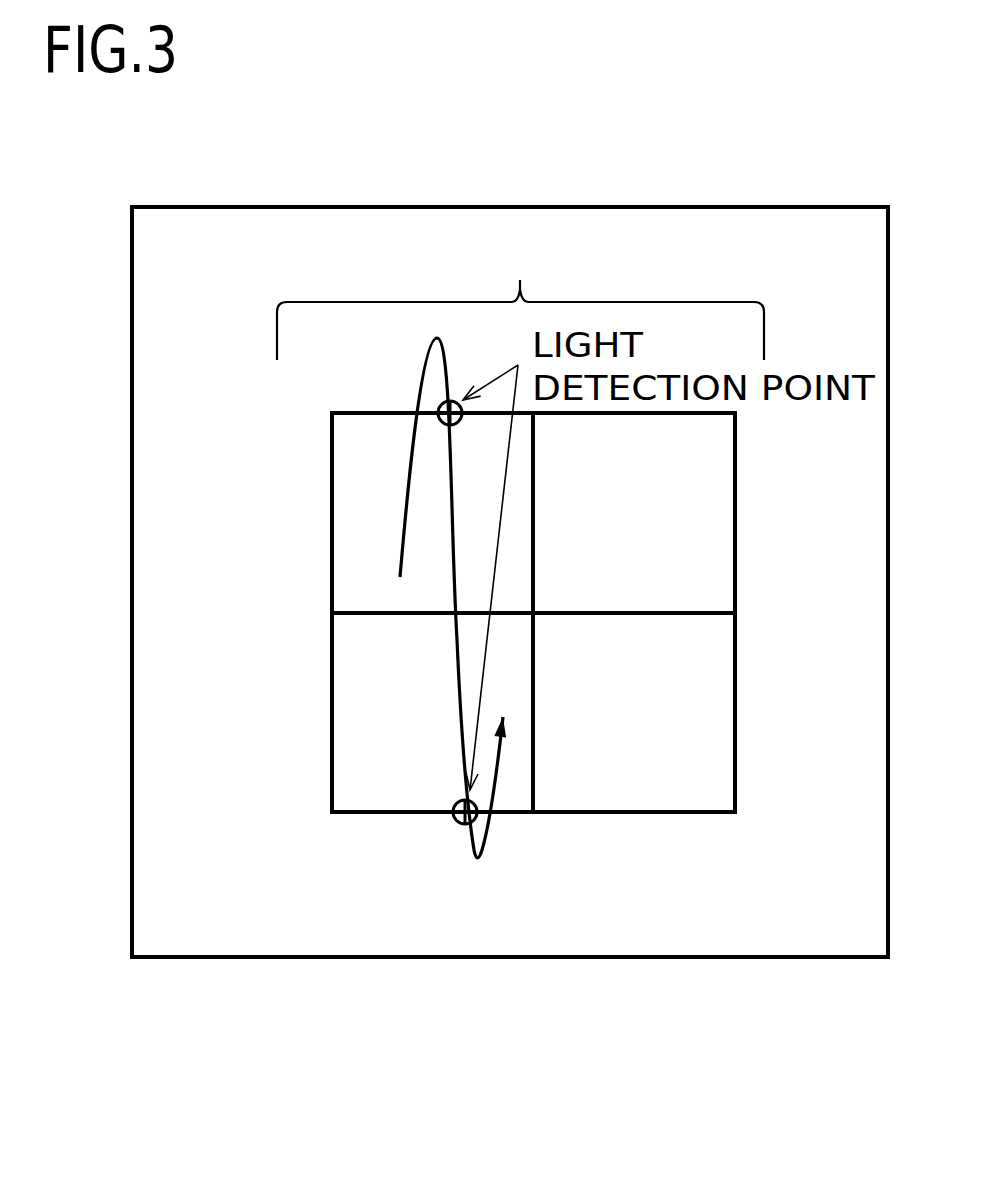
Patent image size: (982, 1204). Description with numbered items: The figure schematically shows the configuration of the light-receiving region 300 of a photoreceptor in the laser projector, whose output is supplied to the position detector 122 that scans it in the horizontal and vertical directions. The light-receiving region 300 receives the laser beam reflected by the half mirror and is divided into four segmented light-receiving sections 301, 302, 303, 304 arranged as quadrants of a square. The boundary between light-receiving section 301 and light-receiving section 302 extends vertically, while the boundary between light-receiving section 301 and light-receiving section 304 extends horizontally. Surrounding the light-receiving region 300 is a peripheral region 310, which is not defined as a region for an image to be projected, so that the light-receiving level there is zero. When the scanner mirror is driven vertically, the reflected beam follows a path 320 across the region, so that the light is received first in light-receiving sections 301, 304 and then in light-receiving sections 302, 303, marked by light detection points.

The position detector 122 is at (752, 202).
The light-receiving region 300 is at (520, 295).
The light-receiving section 301 is at (360, 527).
The light-receiving section 302 is at (705, 523).
The light-receiving section 303 is at (695, 765).
The light-receiving section 304 is at (365, 760).
The peripheral region 310 is at (185, 262).
The path 320 is at (477, 863).